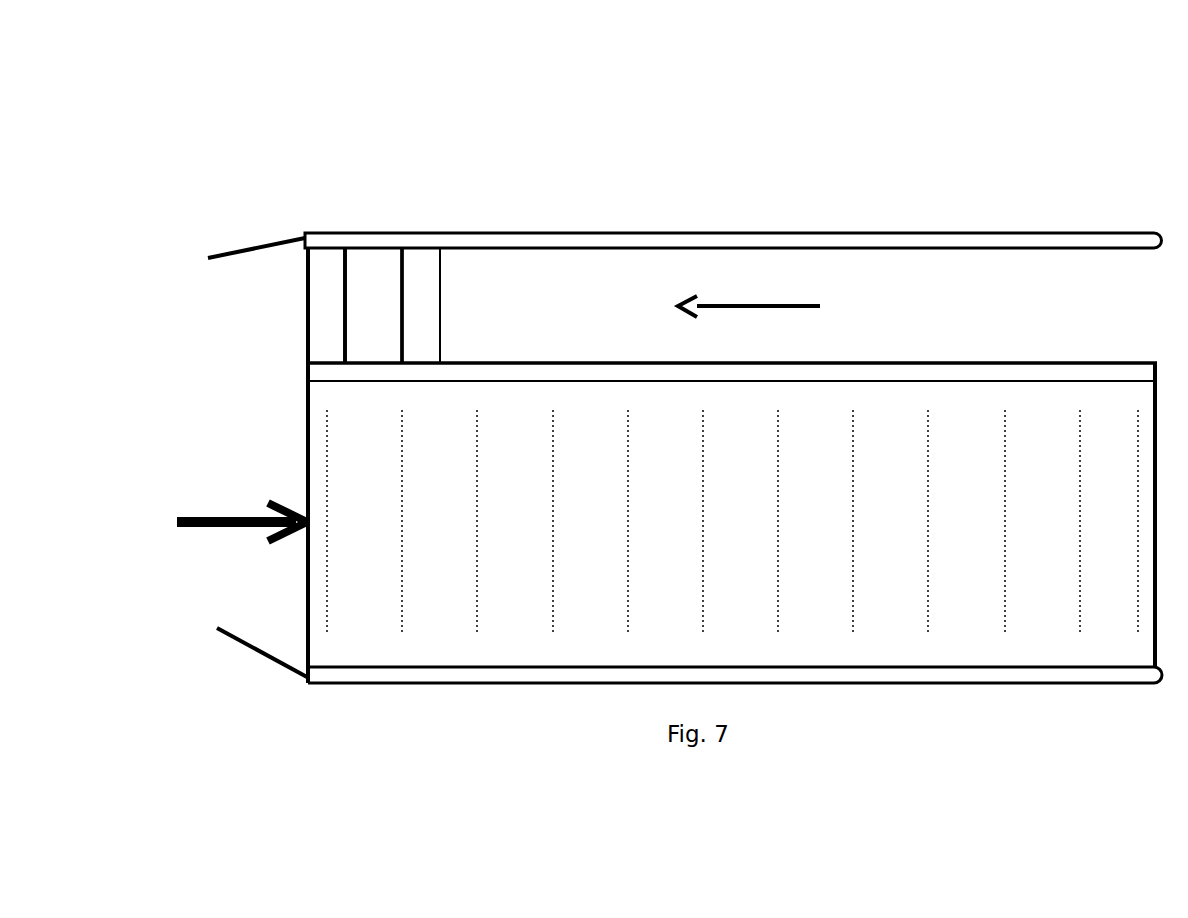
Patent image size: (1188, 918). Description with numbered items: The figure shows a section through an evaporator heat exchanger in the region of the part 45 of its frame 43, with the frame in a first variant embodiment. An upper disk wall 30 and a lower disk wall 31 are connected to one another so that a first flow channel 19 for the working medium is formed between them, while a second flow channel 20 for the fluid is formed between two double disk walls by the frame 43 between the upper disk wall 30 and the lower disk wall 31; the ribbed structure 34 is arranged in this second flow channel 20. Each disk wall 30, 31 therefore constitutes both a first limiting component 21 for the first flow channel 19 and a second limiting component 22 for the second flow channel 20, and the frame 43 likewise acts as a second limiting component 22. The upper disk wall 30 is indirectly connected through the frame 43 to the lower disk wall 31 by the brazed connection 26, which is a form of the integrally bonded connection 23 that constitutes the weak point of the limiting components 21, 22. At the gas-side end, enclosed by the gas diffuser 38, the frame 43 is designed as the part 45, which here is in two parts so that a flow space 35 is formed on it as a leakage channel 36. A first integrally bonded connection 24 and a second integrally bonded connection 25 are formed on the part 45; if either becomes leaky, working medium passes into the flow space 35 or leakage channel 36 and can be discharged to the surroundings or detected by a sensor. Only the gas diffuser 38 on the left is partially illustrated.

The first flow channel 19 is at (635, 288).
The second flow channel 20 is at (587, 638).
The first limiting component 21 is at (863, 238).
The second limiting component 22 is at (732, 446).
The integrally bonded connection 23 is at (342, 247).
The first integrally bonded connection 24 is at (417, 247).
The second integrally bonded connection 25 is at (301, 254).
The brazed connection 26 is at (457, 254).
The upper disk wall 30 is at (732, 446).
The lower disk wall 31 is at (1019, 446).
The ribbed structure 34 is at (472, 572).
The flow space 35 is at (375, 277).
The leakage channel 36 is at (485, 237).
The gas diffuser 38 is at (235, 252).
The frame 43 is at (327, 285).
The part 45 is at (455, 265).